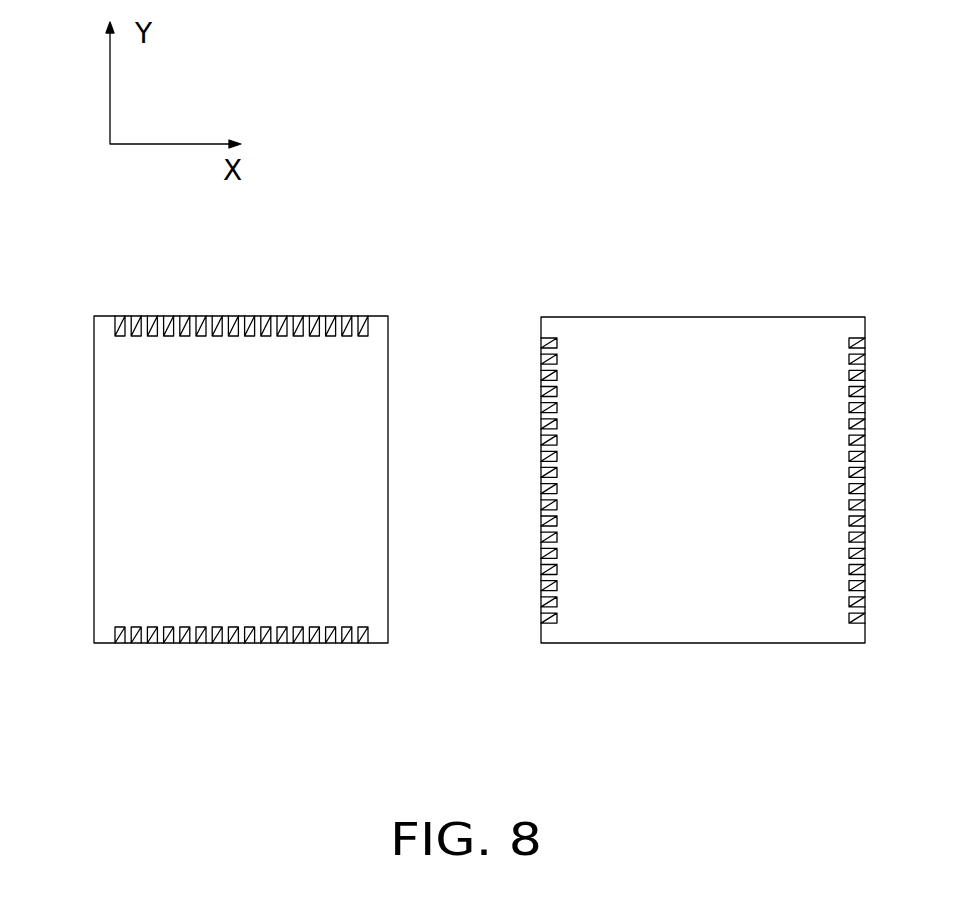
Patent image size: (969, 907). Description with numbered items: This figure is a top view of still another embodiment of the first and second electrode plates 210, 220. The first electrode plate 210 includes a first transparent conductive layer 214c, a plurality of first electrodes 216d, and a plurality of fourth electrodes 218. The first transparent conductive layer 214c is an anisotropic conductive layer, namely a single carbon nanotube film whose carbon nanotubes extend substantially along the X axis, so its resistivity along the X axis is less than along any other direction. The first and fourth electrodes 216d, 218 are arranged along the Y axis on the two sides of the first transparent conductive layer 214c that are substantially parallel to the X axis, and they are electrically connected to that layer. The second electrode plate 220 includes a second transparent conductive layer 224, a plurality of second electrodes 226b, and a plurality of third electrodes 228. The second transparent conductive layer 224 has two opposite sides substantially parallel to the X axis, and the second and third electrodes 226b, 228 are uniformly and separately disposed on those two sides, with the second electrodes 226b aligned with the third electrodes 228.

The first electrode plate 210 is at (663, 440).
The first transparent conductive layer 214c is at (752, 388).
The first electrodes 216d is at (547, 342).
The fourth electrodes 218 is at (857, 340).
The second electrode plate 220 is at (251, 459).
The second transparent conductive layer 224 is at (347, 417).
The second electrodes 226b is at (347, 317).
The third electrodes 228 is at (281, 634).